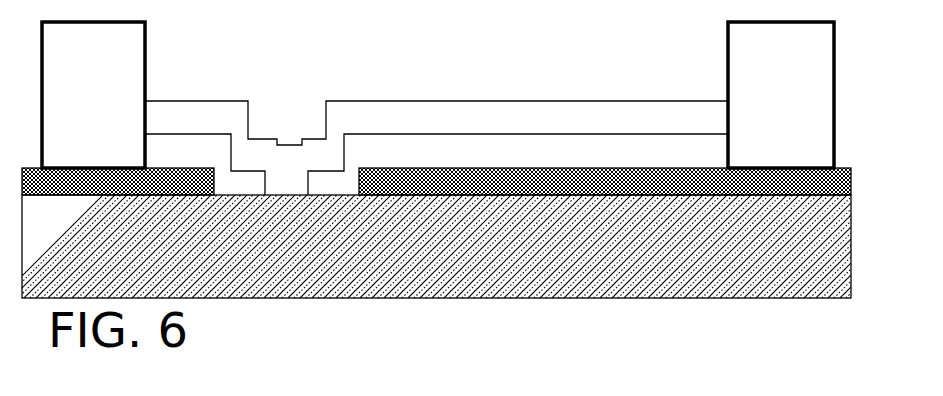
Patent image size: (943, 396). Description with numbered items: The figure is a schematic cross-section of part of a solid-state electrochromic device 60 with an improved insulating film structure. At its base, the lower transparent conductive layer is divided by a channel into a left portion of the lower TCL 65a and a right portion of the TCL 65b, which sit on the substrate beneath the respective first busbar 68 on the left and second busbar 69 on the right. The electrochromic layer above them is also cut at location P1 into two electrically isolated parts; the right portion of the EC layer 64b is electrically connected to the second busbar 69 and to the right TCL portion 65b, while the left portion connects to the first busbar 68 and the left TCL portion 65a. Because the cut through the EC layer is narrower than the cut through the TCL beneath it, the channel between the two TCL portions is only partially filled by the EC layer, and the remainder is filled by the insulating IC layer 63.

The solid-state electrochromic device 60 is at (459, 376).
The insulating IC layer 63 is at (436, 123).
The right portion of the EC layer 64b is at (436, 164).
The left portion of the lower TCL 65a is at (118, 181).
The right portion of the TCL 65b is at (605, 181).
The first busbar 68 is at (80, 104).
The second busbar 69 is at (769, 104).
The location of the cut P1 is at (287, 180).